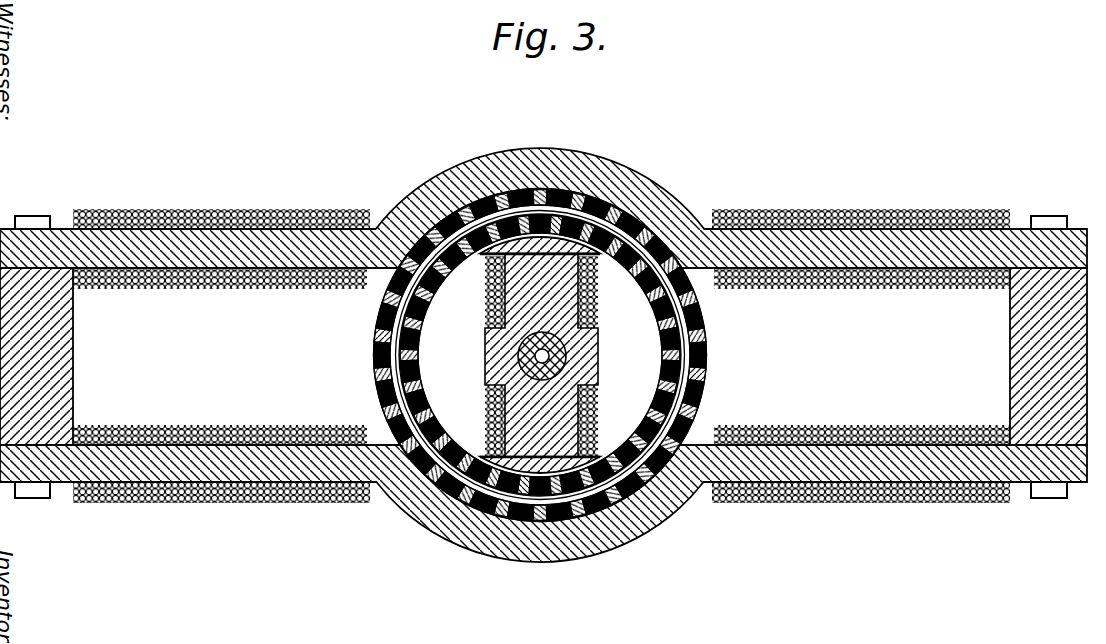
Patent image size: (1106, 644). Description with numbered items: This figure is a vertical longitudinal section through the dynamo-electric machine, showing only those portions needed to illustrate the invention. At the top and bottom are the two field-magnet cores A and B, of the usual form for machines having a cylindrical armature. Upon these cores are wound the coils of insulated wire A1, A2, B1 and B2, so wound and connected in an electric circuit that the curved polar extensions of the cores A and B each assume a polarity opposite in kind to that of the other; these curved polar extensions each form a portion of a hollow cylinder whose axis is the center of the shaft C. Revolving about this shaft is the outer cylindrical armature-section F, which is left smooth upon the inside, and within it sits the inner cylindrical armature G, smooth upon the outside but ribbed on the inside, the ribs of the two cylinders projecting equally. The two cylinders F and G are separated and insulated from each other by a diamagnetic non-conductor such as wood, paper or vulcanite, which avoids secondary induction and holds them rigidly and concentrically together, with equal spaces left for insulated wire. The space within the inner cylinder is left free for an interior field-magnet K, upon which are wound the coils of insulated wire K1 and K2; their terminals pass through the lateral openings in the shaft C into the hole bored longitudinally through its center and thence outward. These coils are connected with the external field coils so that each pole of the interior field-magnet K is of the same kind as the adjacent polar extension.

The field-magnet core A is at (543, 183).
The coil of insulated wire A1 is at (221, 228).
The coil of insulated wire A2 is at (861, 228).
The field-magnet core B is at (543, 531).
The coil of insulated wire B1 is at (221, 491).
The coil of insulated wire B2 is at (861, 491).
The outer cylindrical armature-section F is at (518, 354).
The inner cylindrical armature G is at (539, 355).
The shaft C is at (520, 365).
The interior field-magnet K is at (562, 355).
The coil of insulated wire K1 is at (567, 292).
The coil of insulated wire K2 is at (567, 421).